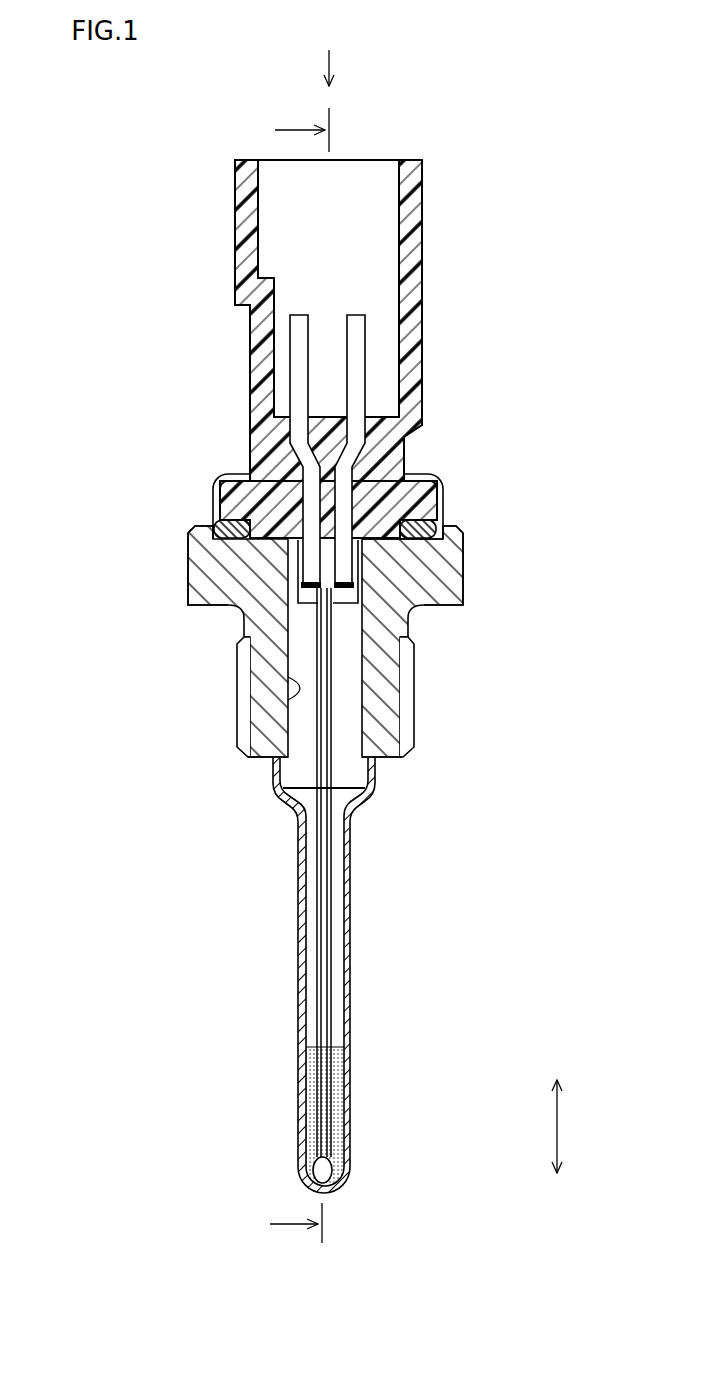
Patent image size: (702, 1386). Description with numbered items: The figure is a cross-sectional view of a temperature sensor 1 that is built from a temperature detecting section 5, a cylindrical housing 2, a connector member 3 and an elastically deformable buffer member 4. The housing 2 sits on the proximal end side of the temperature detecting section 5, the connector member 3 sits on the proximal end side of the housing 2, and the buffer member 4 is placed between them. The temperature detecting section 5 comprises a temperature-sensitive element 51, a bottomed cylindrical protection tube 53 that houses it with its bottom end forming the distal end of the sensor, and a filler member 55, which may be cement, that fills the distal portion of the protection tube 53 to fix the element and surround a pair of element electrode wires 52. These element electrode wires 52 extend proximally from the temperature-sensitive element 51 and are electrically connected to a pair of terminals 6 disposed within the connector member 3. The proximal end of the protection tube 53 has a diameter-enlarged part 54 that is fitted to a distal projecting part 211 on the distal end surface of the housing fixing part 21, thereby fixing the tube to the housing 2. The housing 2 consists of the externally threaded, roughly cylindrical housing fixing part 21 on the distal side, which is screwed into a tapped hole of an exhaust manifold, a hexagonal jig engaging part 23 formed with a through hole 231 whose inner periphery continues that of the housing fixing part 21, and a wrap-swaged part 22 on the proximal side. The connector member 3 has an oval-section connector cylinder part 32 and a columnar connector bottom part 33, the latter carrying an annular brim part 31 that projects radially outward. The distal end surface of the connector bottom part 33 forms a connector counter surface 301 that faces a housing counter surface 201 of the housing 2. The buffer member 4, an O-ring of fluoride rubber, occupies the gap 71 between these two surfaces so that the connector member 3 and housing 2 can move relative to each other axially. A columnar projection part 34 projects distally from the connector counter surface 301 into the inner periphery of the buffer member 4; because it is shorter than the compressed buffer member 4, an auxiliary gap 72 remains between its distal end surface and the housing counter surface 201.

The temperature sensor 1 is at (502, 178).
The housing 2 is at (468, 598).
The connector member 3 is at (425, 290).
The buffer member 4 is at (217, 530).
The temperature detecting section 5 is at (363, 1075).
The terminals 6 is at (297, 360).
The housing fixing part 21 is at (415, 722).
The wrap-swaged part 22 is at (215, 480).
The jig engaging part 23 is at (187, 593).
The brim part 31 is at (420, 495).
The connector cylinder part 32 is at (432, 178).
The connector bottom part 33 is at (247, 435).
The projection part 34 is at (300, 545).
The temperature-sensitive element 51 is at (340, 1170).
The element electrode wires 52 is at (318, 942).
The protection tube 53 is at (345, 888).
The diameter-enlarged part 54 is at (283, 785).
The filler member 55 is at (305, 1117).
The gap 71 is at (213, 533).
The auxiliary gap 72 is at (377, 542).
The housing counter surface 201 is at (462, 547).
The distal projecting part 211 is at (368, 780).
The through hole 231 is at (300, 700).
The connector counter surface 301 is at (440, 530).